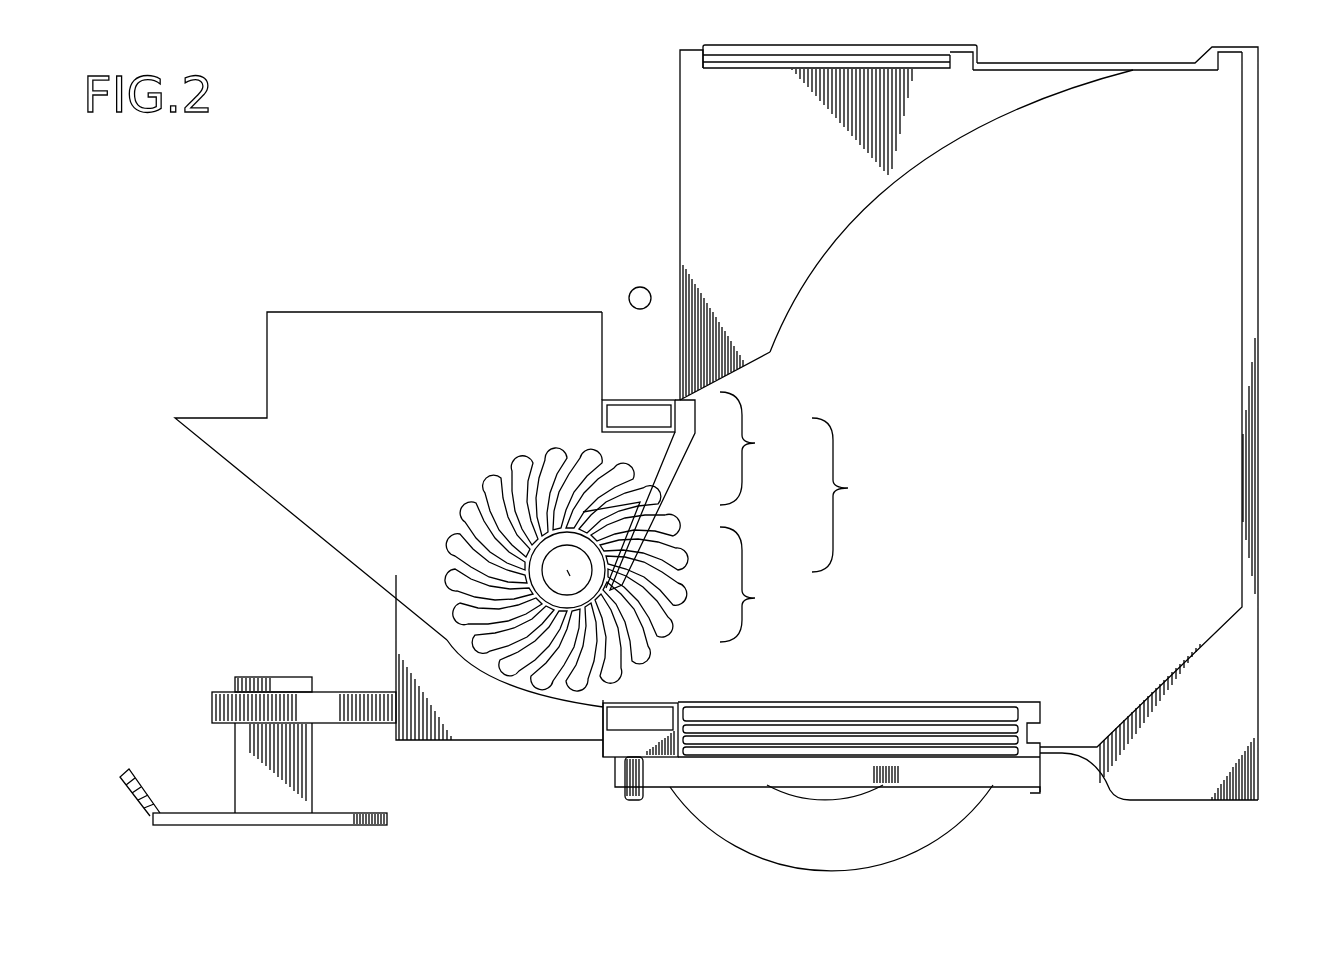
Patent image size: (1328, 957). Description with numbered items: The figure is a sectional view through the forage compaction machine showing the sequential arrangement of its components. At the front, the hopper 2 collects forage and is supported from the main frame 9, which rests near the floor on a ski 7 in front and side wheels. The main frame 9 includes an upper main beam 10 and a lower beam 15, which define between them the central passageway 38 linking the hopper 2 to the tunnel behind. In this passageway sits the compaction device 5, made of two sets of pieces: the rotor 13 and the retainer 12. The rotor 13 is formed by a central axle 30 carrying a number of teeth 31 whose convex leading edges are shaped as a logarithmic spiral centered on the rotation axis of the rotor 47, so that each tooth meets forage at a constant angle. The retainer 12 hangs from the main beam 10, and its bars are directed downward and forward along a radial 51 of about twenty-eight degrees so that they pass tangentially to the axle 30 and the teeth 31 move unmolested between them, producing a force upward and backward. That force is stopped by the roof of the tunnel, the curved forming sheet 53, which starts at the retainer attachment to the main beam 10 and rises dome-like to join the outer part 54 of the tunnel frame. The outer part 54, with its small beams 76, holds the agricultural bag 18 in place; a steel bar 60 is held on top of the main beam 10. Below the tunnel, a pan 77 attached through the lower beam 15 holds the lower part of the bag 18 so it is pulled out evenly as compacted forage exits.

The hopper 2 is at (320, 308).
The compaction device 5 is at (841, 495).
The ski 7 is at (203, 810).
The main frame 9 is at (365, 706).
The main beam 10 is at (648, 418).
The retainer 12 is at (755, 448).
The rotor 13 is at (755, 584).
The lower beam 15 is at (644, 724).
The agricultural bag 18 is at (866, 48).
The central axle 30 is at (545, 593).
The teeth 31 is at (460, 530).
The central passageway 38 is at (437, 580).
The rotation axis of the rotor 47 is at (566, 568).
The radial 51 is at (666, 441).
The forming sheet 53 is at (896, 187).
The outer part of the tunnel frame 54 is at (766, 73).
The steel bar 60 is at (640, 284).
The small beams 76 is at (686, 58).
The pan 77 is at (1024, 775).